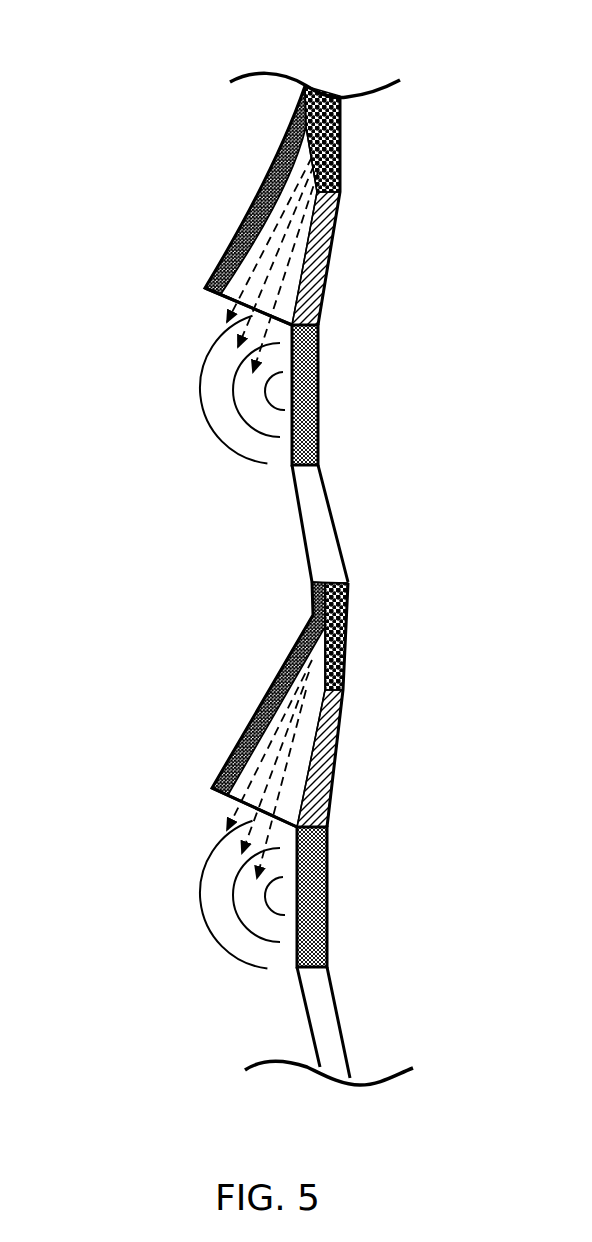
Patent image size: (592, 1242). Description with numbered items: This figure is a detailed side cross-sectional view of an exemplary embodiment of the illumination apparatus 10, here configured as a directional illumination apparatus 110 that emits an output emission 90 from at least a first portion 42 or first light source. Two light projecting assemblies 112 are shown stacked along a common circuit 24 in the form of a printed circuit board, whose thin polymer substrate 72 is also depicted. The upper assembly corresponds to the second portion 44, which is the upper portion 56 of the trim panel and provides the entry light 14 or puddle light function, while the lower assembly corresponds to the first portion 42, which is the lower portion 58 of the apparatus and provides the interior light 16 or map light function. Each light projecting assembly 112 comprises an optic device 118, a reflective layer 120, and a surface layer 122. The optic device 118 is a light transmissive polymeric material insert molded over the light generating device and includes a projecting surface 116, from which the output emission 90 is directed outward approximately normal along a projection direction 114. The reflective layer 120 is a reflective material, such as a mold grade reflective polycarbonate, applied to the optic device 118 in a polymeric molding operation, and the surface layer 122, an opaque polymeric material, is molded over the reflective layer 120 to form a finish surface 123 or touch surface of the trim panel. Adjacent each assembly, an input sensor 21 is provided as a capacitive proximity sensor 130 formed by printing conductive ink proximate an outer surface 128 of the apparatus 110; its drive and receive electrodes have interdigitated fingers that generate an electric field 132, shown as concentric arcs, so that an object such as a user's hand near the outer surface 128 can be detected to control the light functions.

The illumination apparatus 10 is at (283, 550).
The directional illumination apparatus 110 is at (424, 52).
The entry light 14 is at (179, 205).
The second portion 44 is at (179, 205).
The upper portion 56 is at (175, 168).
The light projecting assembly 112 is at (182, 456).
The interior light 16 is at (182, 704).
The first portion 42 is at (182, 704).
The lower portion 58 is at (172, 707).
The surface layer 122 is at (300, 125).
The reflective layer 120 is at (282, 152).
The optic device 118 is at (268, 200).
The projecting surface 116 is at (230, 297).
The substrate 72 is at (330, 257).
The output emission 90 is at (245, 284).
The input sensor 21 is at (382, 646).
The capacitive proximity sensor 130 is at (318, 380).
The circuit 24 is at (254, 524).
The finish surface 123 is at (328, 500).
The outer surface 128 is at (172, 382).
The projection direction 114 is at (216, 376).
The electric field 132 is at (228, 423).